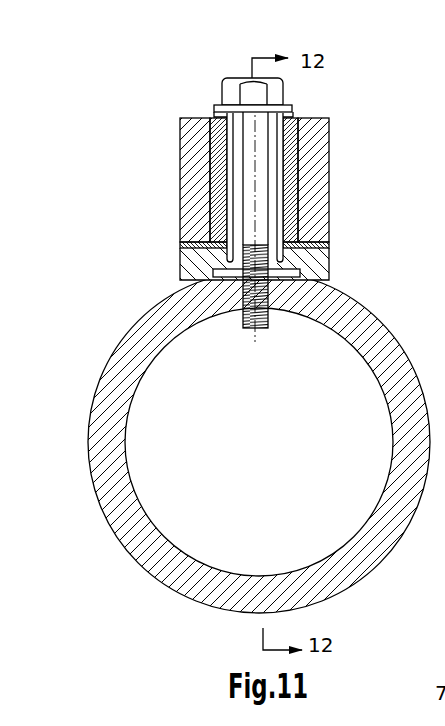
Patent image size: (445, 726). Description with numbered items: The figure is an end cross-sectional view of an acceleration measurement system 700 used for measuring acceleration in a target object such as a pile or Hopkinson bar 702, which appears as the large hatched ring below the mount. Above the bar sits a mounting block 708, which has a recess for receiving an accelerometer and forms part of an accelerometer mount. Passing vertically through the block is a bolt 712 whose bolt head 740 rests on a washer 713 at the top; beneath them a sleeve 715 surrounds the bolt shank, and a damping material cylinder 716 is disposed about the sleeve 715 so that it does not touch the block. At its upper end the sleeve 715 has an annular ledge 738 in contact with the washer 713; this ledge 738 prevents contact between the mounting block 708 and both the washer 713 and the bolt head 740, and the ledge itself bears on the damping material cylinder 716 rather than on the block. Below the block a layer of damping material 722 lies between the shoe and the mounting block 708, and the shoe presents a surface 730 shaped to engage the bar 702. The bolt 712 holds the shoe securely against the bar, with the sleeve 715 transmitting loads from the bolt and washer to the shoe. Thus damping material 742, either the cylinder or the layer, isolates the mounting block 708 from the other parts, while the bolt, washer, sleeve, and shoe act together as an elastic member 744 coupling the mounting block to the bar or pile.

The acceleration measurement system 700 is at (222, 193).
The Hopkinson bar 702 is at (91, 443).
The mounting block 708 is at (196, 143).
The bolt 712 is at (233, 63).
The washer 713 is at (290, 108).
The sleeve 715 is at (282, 158).
The damping material cylinder 716 is at (292, 203).
The layer of damping material 722 is at (323, 243).
The surface 730 is at (227, 279).
The annular ledge 738 is at (293, 116).
The bolt head 740 is at (283, 92).
The damping material 742 is at (165, 248).
The elastic member 744 is at (250, 99).